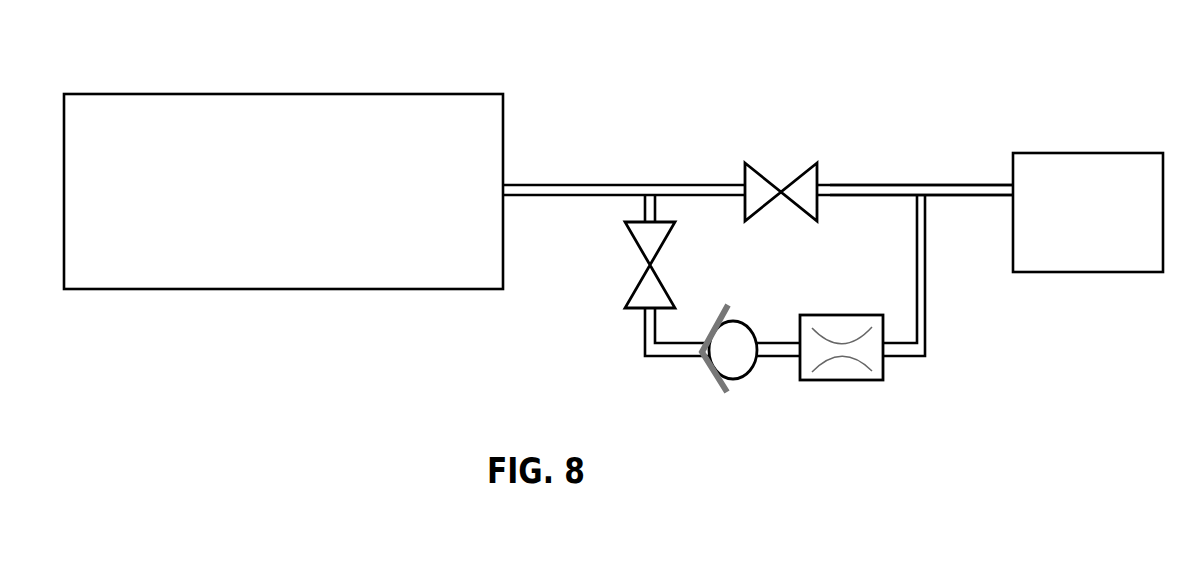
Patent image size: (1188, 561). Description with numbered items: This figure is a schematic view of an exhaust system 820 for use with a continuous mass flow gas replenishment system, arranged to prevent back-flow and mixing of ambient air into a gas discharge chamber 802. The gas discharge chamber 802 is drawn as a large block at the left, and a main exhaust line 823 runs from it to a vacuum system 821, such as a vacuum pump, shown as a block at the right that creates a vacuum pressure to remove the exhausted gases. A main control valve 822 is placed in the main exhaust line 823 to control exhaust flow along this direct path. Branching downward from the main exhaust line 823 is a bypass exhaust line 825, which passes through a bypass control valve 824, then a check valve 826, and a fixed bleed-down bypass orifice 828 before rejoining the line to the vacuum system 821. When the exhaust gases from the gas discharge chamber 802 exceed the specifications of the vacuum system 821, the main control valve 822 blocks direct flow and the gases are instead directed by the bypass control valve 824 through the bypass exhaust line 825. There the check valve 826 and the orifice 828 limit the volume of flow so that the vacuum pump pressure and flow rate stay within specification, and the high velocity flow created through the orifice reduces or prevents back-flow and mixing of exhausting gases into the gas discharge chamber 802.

The gas discharge chamber 802 is at (248, 94).
The exhaust system 820 is at (609, 90).
The vacuum system 821 is at (1131, 152).
The main control valve 822 is at (763, 164).
The main exhaust line 823 is at (855, 141).
The bypass control valve 824 is at (647, 264).
The bypass exhaust line 825 is at (780, 436).
The check valve 826 is at (741, 321).
The fixed bleed-down bypass orifice 828 is at (853, 315).